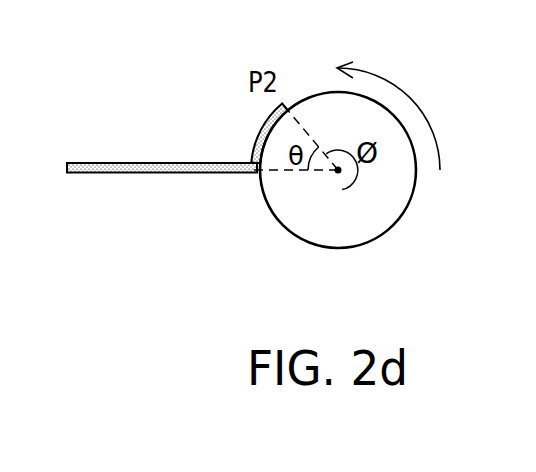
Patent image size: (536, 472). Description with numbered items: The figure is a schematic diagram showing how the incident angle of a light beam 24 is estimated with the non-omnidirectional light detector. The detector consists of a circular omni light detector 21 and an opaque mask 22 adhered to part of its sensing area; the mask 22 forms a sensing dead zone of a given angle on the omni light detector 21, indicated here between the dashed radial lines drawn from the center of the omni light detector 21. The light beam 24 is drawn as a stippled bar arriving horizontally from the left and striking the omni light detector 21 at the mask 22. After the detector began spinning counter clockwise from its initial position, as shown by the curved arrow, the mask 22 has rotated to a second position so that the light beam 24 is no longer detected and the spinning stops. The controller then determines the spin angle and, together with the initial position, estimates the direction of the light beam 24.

The omni light detector 21 is at (383, 234).
The mask 22 is at (255, 143).
The light beam 24 is at (158, 163).